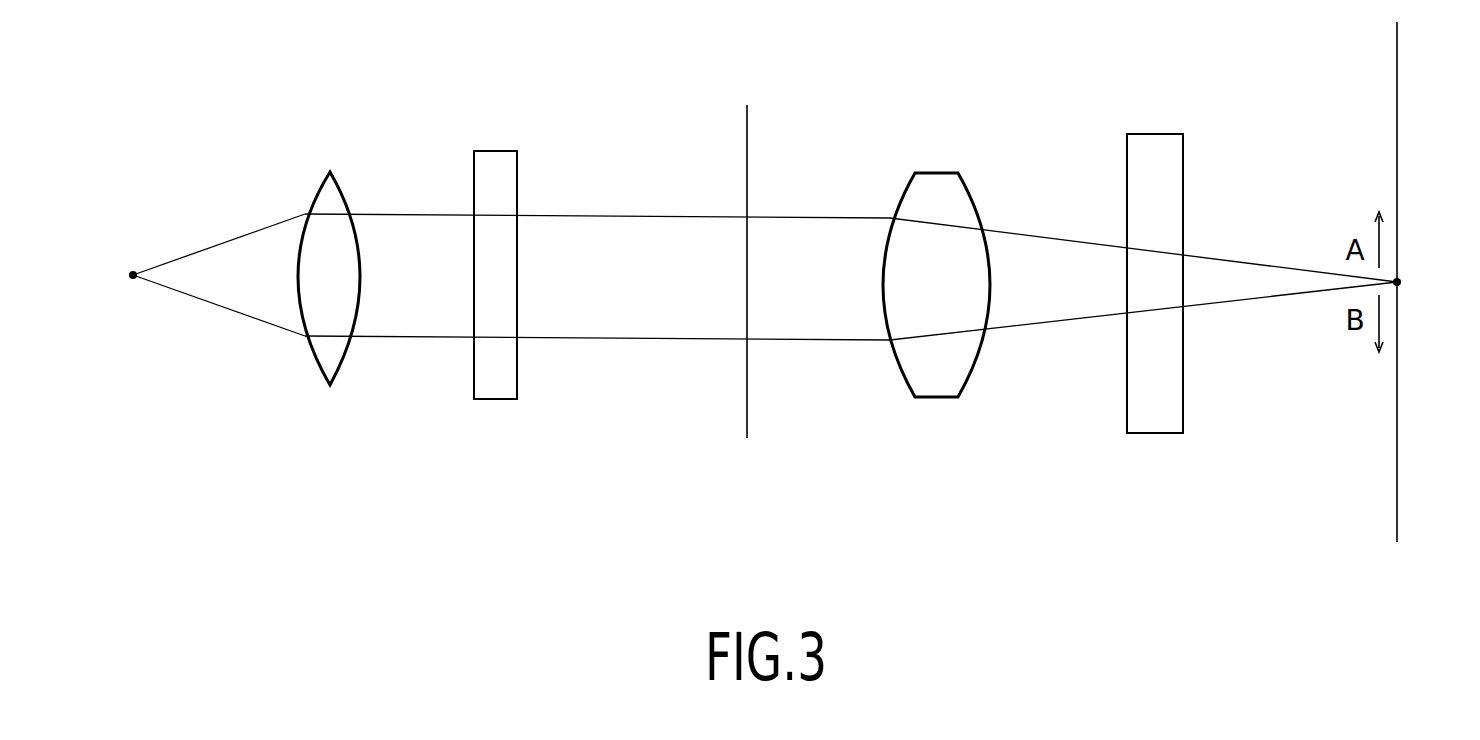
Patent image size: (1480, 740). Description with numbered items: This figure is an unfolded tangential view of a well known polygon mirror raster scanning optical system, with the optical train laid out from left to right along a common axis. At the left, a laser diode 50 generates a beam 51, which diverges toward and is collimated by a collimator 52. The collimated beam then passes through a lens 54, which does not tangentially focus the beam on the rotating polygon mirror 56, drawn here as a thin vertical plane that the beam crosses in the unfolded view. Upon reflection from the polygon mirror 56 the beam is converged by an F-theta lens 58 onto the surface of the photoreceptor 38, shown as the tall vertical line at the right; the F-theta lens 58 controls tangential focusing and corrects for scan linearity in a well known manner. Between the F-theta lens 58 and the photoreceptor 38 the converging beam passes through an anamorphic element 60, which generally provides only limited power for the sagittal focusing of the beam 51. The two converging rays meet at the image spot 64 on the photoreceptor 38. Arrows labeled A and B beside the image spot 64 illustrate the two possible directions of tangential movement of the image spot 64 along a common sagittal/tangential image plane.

The photoreceptor 38 is at (1397, 542).
The laser diode 50 is at (135, 282).
The beam 51 is at (214, 248).
The collimator 52 is at (336, 372).
The lens 54 is at (490, 400).
The rotating polygon mirror 56 is at (747, 438).
The F-theta lens 58 is at (935, 397).
The anamorphic element 60 is at (1155, 433).
The image spot 64 is at (1401, 282).